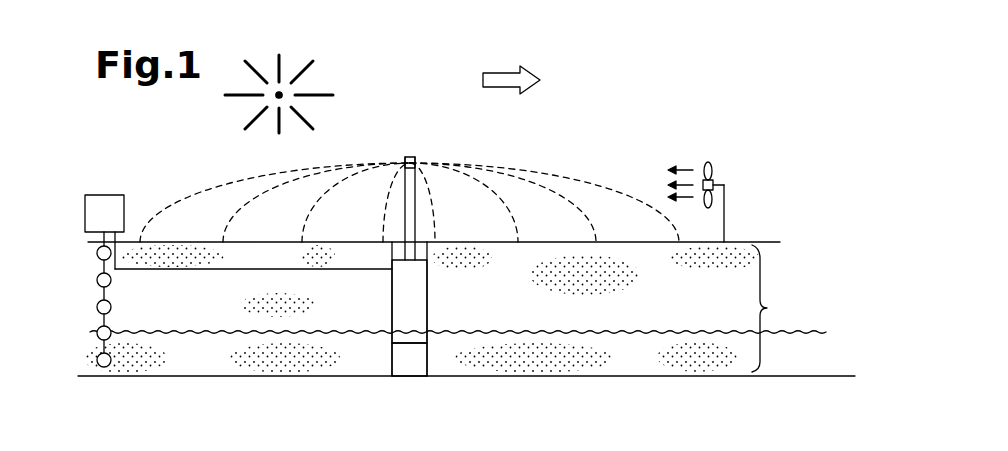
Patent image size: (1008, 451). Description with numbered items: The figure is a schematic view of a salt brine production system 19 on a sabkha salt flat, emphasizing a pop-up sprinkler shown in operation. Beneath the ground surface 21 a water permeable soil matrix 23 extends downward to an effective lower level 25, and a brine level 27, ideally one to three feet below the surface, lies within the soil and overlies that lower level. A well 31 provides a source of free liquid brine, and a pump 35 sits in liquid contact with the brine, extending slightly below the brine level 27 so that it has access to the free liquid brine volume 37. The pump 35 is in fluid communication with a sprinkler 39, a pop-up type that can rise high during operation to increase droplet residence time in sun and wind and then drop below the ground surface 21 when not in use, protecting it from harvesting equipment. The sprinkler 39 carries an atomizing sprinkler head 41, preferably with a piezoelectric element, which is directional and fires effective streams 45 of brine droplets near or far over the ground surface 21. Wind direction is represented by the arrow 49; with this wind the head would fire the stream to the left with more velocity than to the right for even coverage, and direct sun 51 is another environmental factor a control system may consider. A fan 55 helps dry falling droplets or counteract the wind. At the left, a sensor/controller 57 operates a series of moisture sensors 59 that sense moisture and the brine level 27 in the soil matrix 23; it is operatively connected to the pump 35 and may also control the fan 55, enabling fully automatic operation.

The salt brine production system 19 is at (709, 135).
The ground surface 21 is at (752, 242).
The soil matrix 23 is at (779, 308).
The effective lower level 25 is at (820, 376).
The brine level 27 is at (243, 332).
The well 31 is at (396, 352).
The pump 35 is at (403, 288).
The free liquid brine volume 37 is at (425, 350).
The sprinkler 39 is at (405, 210).
The atomizing sprinkler head 41 is at (415, 165).
The effective stream 45 is at (255, 195).
The arrow 49 is at (520, 66).
The direct sun 51 is at (305, 78).
The fan 55 is at (727, 192).
The sensor/controller 57 is at (85, 215).
The moisture sensors 59 is at (97, 360).